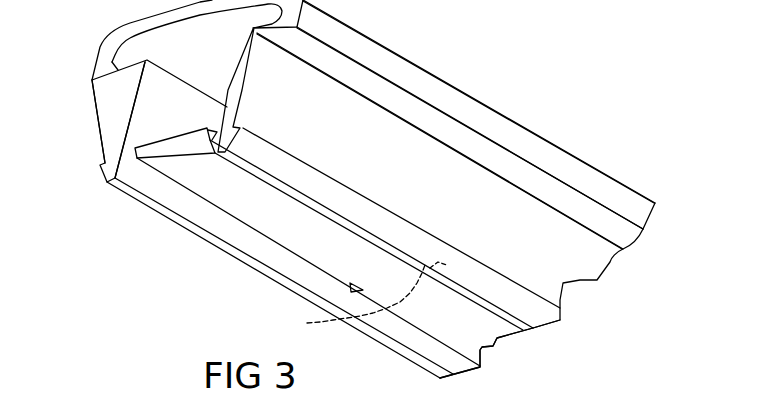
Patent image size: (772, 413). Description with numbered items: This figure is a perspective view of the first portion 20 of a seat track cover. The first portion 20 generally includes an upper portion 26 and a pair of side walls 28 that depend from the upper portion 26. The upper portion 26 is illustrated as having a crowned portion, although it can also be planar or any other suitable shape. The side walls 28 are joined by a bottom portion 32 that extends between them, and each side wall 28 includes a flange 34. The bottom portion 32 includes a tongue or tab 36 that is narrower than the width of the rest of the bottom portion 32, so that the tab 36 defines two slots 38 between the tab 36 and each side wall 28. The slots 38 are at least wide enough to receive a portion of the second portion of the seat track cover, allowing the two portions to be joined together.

The first portion 20 is at (466, 54).
The upper portion 26 is at (347, 22).
The side walls 28 is at (460, 170).
The bottom portion 32 is at (441, 323).
The flange 34 is at (102, 175).
The tab 36 is at (215, 182).
The slots 38 is at (352, 288).